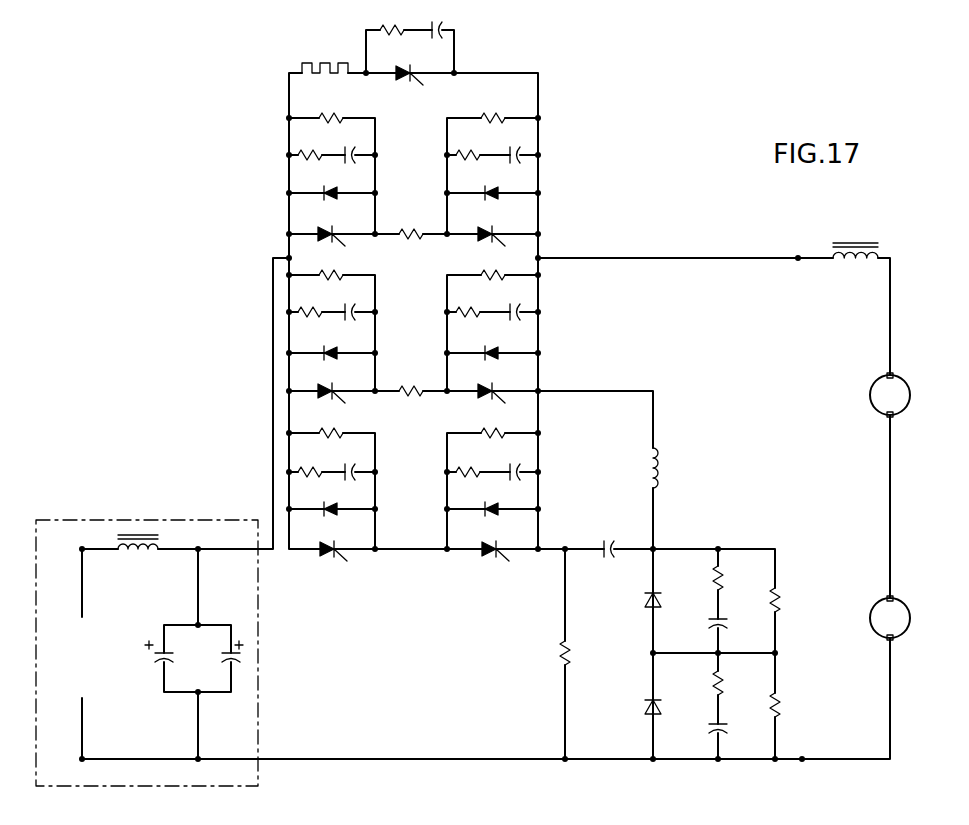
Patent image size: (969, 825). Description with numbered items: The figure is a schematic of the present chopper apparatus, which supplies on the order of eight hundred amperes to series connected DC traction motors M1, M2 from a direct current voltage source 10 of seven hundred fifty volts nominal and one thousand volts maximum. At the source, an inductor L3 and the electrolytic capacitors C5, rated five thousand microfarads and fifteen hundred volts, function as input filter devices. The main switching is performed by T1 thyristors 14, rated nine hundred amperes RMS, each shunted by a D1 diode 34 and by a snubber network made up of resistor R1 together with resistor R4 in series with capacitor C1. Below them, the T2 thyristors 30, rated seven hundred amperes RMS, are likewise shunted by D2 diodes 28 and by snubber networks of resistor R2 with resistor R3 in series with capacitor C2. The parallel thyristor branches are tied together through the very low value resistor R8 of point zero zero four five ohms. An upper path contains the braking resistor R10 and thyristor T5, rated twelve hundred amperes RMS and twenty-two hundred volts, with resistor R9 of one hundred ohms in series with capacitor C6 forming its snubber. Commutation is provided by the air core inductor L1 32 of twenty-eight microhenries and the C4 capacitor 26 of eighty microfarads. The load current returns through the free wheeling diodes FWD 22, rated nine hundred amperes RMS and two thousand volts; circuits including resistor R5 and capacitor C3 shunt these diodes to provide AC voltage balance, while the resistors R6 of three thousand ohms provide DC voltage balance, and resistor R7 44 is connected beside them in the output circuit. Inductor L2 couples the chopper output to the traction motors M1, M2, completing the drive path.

The D.C. voltage source 10 is at (180, 516).
The T1 thyristor 14 is at (326, 227).
The D1 diode 34 is at (320, 188).
The D2 diode 28 is at (322, 503).
The T2 thyristor 30 is at (337, 564).
The C4 capacitor 26 is at (603, 537).
The L1 inductor 32 is at (662, 472).
The FWD diode 22 is at (645, 599).
The R7 resistor 44 is at (562, 652).
The resistor R1 is at (328, 112).
The resistor R2 is at (333, 430).
The resistor R3 is at (320, 466).
The resistor R4 is at (319, 152).
The resistor R5 is at (709, 583).
The resistor R6 is at (765, 601).
The resistor R8 is at (411, 219).
The resistor R9 is at (397, 35).
The braking resistor R10 is at (319, 63).
The capacitor C1 is at (351, 147).
The capacitor C2 is at (353, 461).
The capacitor C3 is at (705, 626).
The electrolytic capacitor C5 is at (222, 652).
The capacitor C6 is at (442, 42).
The thyristor T5 is at (404, 88).
The inductor L2 is at (853, 262).
The inductor L3 is at (145, 556).
The DC traction motor M1 is at (880, 404).
The DC traction motor M2 is at (880, 627).